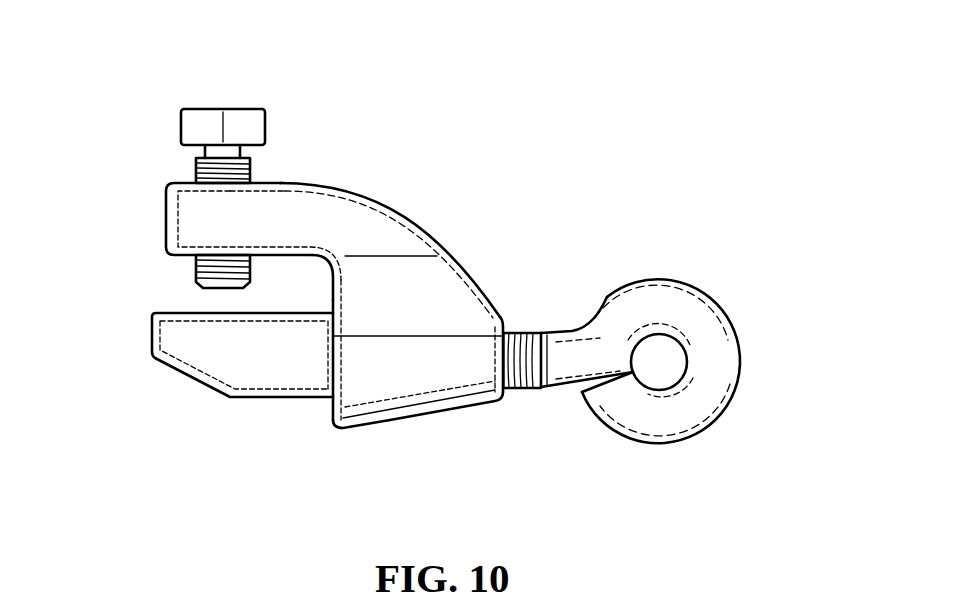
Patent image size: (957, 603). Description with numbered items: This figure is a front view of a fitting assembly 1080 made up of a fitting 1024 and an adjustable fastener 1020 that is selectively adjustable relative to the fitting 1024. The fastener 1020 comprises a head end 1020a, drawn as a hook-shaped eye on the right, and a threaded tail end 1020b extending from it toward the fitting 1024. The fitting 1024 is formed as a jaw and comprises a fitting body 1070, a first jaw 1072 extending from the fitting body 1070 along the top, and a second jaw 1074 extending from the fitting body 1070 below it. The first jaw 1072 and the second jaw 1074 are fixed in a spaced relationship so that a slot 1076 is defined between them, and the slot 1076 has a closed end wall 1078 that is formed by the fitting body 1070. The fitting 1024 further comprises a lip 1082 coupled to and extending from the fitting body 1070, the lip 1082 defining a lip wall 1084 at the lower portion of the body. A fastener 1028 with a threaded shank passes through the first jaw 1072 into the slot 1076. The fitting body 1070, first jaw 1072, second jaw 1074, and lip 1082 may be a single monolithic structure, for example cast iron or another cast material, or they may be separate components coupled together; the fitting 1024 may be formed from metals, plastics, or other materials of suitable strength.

The adjustable fastener 1020 is at (593, 460).
The head end 1020a is at (700, 315).
The threaded tail end 1020b is at (515, 395).
The fitting 1024 is at (455, 197).
The clamping screw 1028 is at (155, 103).
The fitting body 1070 is at (456, 288).
The first jaw 1072 is at (190, 220).
The second jaw 1074 is at (197, 378).
The slot 1076 is at (292, 275).
The end wall 1078 is at (332, 288).
The fitting assembly 1080 is at (350, 97).
The lip 1082 is at (335, 453).
The lip wall 1084 is at (330, 410).